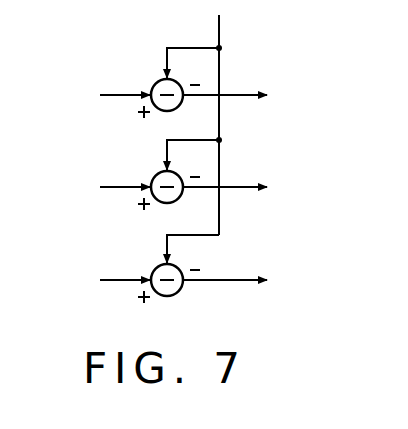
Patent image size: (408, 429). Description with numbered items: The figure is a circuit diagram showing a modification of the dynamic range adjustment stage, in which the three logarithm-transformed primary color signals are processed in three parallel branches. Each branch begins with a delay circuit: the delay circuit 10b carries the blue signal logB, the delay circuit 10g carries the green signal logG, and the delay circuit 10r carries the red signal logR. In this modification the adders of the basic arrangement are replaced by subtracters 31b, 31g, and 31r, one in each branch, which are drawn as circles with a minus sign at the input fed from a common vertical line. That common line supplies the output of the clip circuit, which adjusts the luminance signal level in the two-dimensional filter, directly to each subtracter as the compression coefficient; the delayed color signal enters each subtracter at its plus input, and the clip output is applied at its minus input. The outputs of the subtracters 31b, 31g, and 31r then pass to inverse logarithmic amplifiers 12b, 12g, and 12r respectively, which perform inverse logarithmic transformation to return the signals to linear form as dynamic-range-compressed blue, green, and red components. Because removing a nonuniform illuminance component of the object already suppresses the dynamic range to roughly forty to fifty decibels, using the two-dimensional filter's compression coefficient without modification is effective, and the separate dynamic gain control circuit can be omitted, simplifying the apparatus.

The delay circuit 10b is at (96, 96).
The delay circuit 10g is at (96, 188).
The delay circuit 10r is at (96, 282).
The subtracter 31b is at (154, 85).
The subtracter 31g is at (154, 177).
The subtracter 31r is at (154, 268).
The inverse logarithmic amplifier 12b is at (252, 97).
The inverse logarithmic amplifier 12g is at (252, 189).
The inverse logarithmic amplifier 12r is at (252, 282).